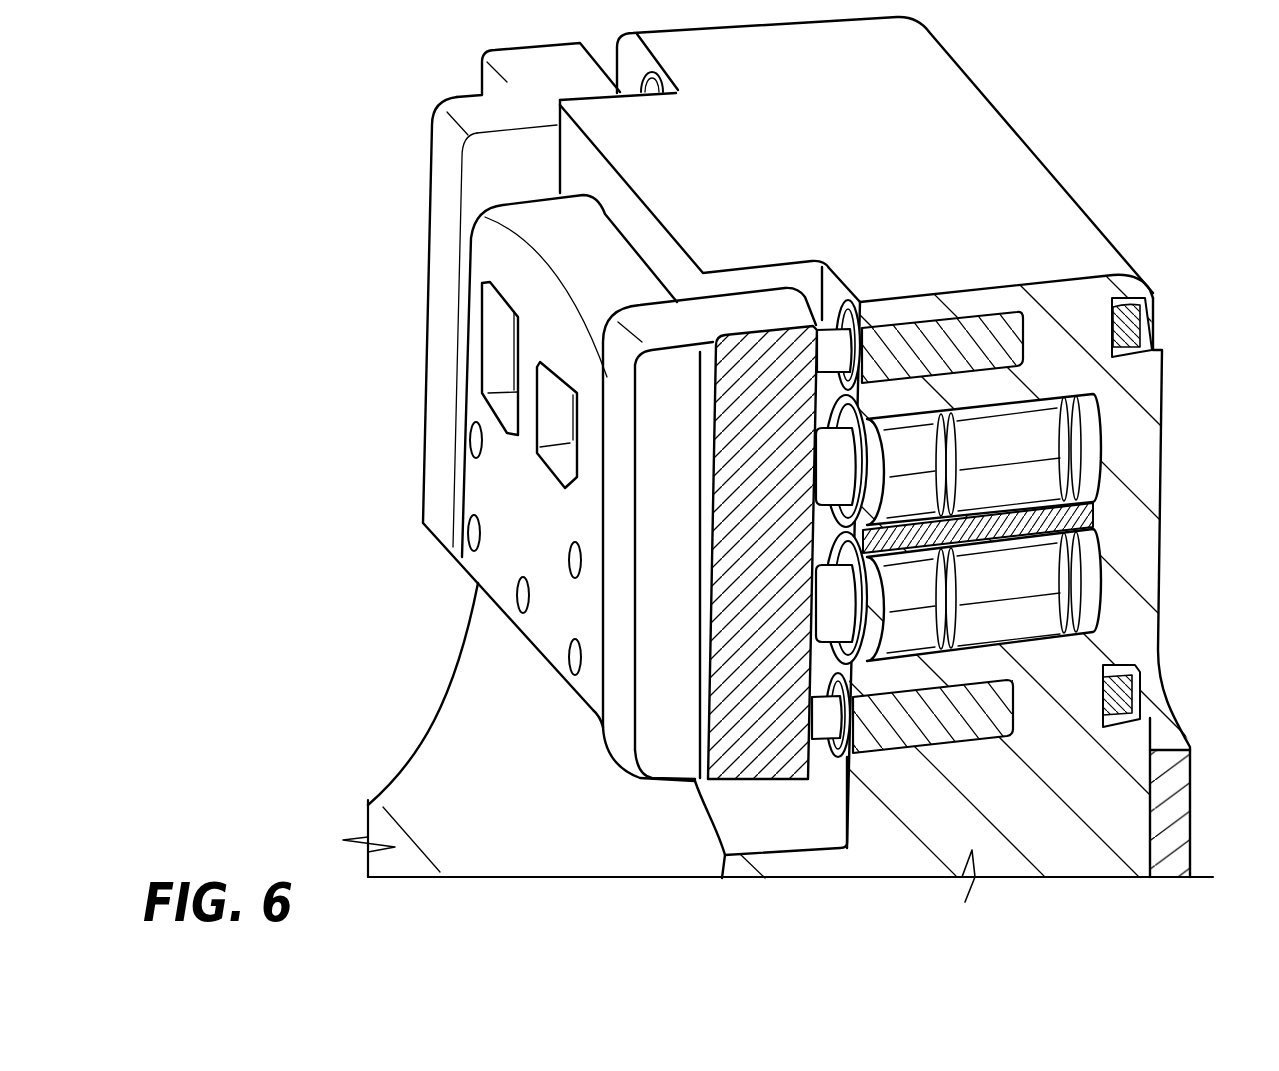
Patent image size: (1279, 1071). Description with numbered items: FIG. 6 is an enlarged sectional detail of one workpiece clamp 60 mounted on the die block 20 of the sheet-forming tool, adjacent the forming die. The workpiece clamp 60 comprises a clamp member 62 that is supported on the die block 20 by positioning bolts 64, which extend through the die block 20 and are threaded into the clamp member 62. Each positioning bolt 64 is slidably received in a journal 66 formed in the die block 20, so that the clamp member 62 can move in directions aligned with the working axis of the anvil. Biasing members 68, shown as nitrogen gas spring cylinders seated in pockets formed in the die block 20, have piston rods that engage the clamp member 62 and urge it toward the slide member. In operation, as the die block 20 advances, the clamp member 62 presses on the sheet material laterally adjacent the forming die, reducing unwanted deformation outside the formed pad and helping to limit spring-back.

The die block 20 is at (1100, 192).
The workpiece clamp 60 is at (377, 182).
The clamp member 62 is at (722, 745).
The positioning bolt 64 is at (1123, 320).
The journal 66 is at (847, 320).
The biasing member 68 is at (1047, 597).